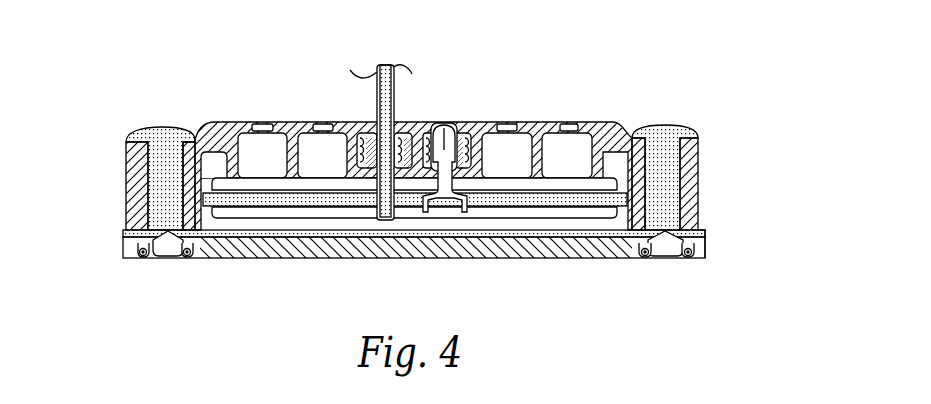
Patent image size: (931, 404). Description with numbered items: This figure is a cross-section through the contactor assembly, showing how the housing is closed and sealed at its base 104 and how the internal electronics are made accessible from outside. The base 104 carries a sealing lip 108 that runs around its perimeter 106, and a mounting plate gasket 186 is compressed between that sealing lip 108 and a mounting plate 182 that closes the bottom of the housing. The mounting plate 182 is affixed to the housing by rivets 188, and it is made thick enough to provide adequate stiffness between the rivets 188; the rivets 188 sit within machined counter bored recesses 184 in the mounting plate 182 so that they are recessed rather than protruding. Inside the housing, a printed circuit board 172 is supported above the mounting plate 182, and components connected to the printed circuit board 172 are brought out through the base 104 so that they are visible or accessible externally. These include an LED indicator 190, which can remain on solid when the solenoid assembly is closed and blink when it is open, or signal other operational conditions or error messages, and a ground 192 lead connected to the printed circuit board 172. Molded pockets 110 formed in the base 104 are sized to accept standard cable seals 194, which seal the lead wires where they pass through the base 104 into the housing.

The base 104 is at (697, 180).
The perimeter 106 is at (127, 167).
The sealing lip 108 is at (196, 245).
The molded pockets 110 is at (567, 145).
The printed circuit board 172 is at (311, 200).
The mounting plate 182 is at (601, 243).
The mounting plate gasket 186 is at (523, 236).
The counter bored recesses 184 is at (686, 253).
The rivets 188 is at (665, 143).
The LED indicators 190 is at (445, 123).
The ground 192 is at (377, 107).
The cable seals 194 is at (435, 123).